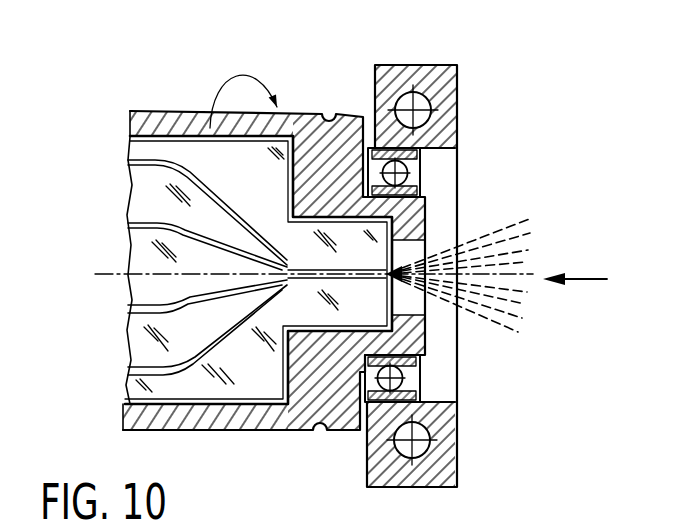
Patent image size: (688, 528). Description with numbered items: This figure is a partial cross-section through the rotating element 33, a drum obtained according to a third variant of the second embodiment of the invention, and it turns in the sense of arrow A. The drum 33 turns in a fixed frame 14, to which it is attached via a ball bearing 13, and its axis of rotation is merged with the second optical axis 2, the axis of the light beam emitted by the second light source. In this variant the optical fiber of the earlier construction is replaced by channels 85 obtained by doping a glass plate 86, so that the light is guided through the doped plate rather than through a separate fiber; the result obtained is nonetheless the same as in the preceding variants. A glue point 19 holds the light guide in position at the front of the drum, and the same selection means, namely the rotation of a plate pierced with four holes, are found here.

The rotating element 33 is at (178, 108).
The glass plate 86 is at (272, 203).
The channels 85 is at (232, 352).
The fixed frame 14 is at (460, 73).
The ball bearing 13 is at (421, 176).
The second optical axis 2 is at (577, 279).
The glue point 19 is at (512, 330).
The arrow A is at (207, 167).